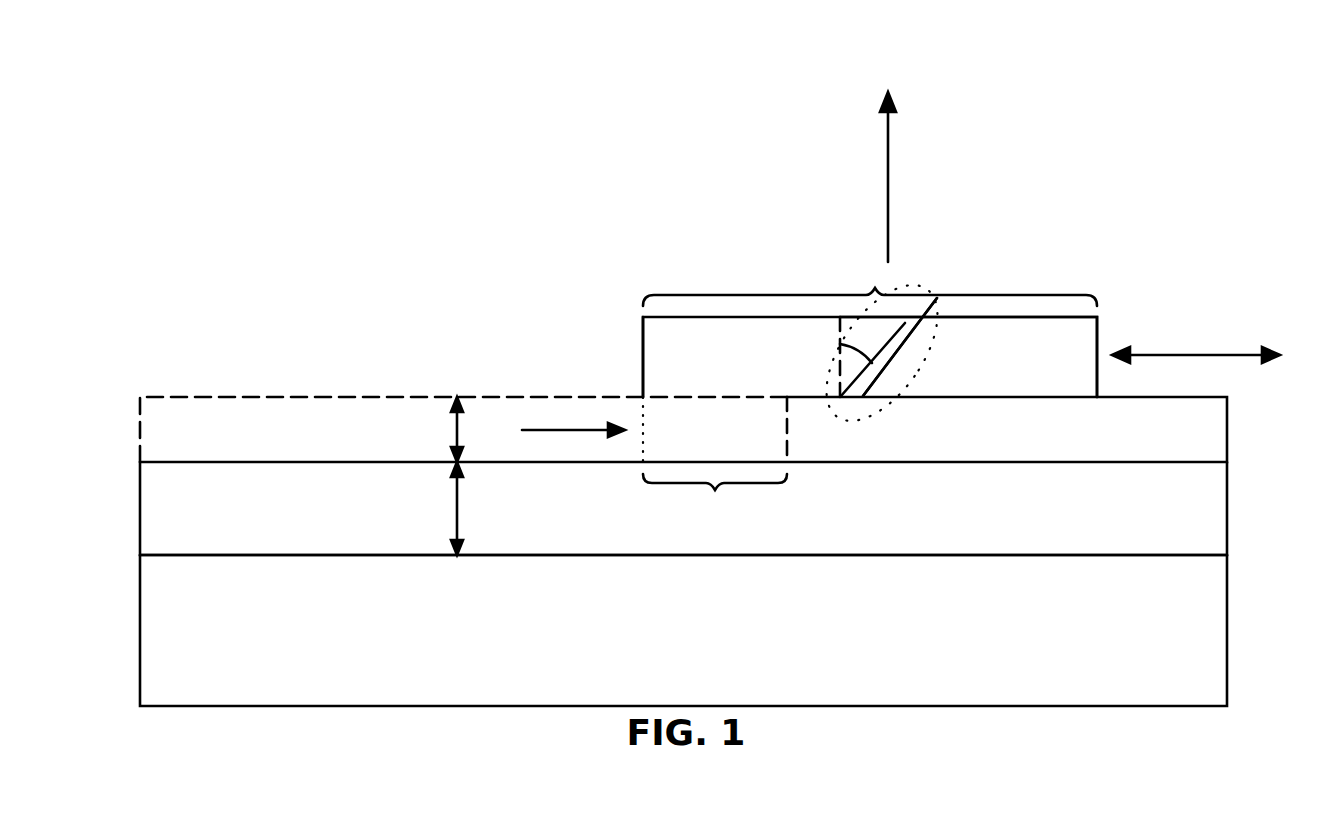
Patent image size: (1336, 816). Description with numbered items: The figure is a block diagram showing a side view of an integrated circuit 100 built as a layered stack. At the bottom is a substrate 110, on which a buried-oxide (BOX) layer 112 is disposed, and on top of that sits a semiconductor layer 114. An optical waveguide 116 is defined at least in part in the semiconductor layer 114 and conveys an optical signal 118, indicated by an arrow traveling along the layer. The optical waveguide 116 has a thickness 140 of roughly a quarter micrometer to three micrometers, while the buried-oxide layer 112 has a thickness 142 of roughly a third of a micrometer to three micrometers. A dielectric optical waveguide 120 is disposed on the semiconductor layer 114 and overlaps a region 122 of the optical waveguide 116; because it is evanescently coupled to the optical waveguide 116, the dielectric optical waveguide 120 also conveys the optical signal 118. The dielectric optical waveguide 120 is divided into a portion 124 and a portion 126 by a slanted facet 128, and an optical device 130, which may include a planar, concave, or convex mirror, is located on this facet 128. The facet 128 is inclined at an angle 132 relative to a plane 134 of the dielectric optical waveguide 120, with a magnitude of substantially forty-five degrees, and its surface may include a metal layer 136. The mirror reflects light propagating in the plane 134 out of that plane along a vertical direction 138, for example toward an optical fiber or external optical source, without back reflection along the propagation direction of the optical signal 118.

The integrated circuit 100 is at (340, 115).
The substrate 110 is at (683, 630).
The buried-oxide (BOX) layer 112 is at (683, 508).
The semiconductor layer 114 is at (683, 429).
The optical waveguide 116 is at (463, 429).
The optical signal 118 is at (585, 430).
The dielectric optical waveguide 120 is at (875, 289).
The region 122 is at (715, 490).
The portion 124 is at (741, 357).
The portion 126 is at (968, 357).
The facet 128 is at (898, 355).
The optical device 130 is at (865, 422).
The angle 132 is at (849, 363).
The plane 134 is at (1182, 355).
The metal layer 136 is at (905, 323).
The vertical direction 138 is at (888, 179).
The thickness 140 is at (457, 430).
The thickness 142 is at (457, 508).